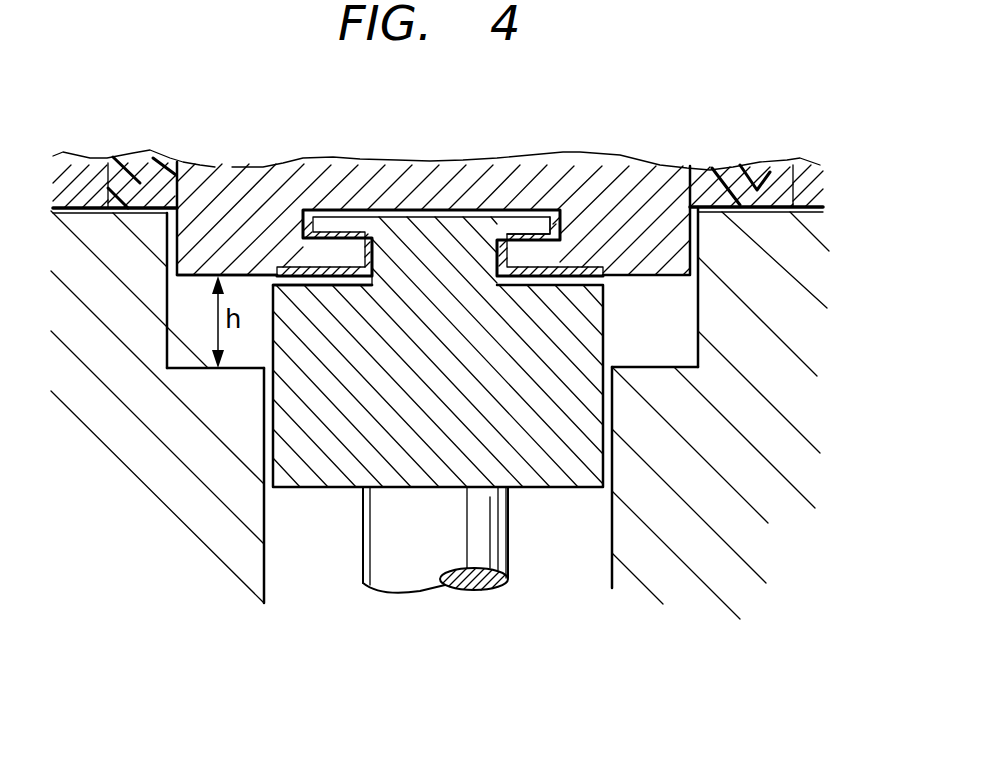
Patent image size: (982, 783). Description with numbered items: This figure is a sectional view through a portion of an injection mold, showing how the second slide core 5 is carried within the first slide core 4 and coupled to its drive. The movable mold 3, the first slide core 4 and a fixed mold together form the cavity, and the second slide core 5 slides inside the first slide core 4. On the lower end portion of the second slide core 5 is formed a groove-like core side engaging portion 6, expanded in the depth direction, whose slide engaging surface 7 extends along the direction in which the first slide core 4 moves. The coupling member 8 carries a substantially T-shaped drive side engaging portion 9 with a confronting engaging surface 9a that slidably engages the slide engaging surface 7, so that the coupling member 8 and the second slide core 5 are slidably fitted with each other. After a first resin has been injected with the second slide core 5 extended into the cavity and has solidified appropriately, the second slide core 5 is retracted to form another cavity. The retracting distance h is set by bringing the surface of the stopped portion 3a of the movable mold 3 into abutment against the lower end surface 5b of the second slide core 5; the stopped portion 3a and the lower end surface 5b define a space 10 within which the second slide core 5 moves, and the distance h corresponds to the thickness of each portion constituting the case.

The movable mold 3 is at (98, 240).
The stopped portion 3a is at (175, 362).
The first slide core 4 is at (137, 192).
The second slide core 5 is at (598, 187).
The lower end surface 5b is at (196, 278).
The core side engaging portion 6 is at (411, 212).
The slide engaging surface 7 is at (320, 283).
The coupling member 8 is at (388, 308).
The drive side engaging portion 9 is at (448, 245).
The confronting engaging surface 9a is at (524, 245).
The space 10 is at (246, 297).